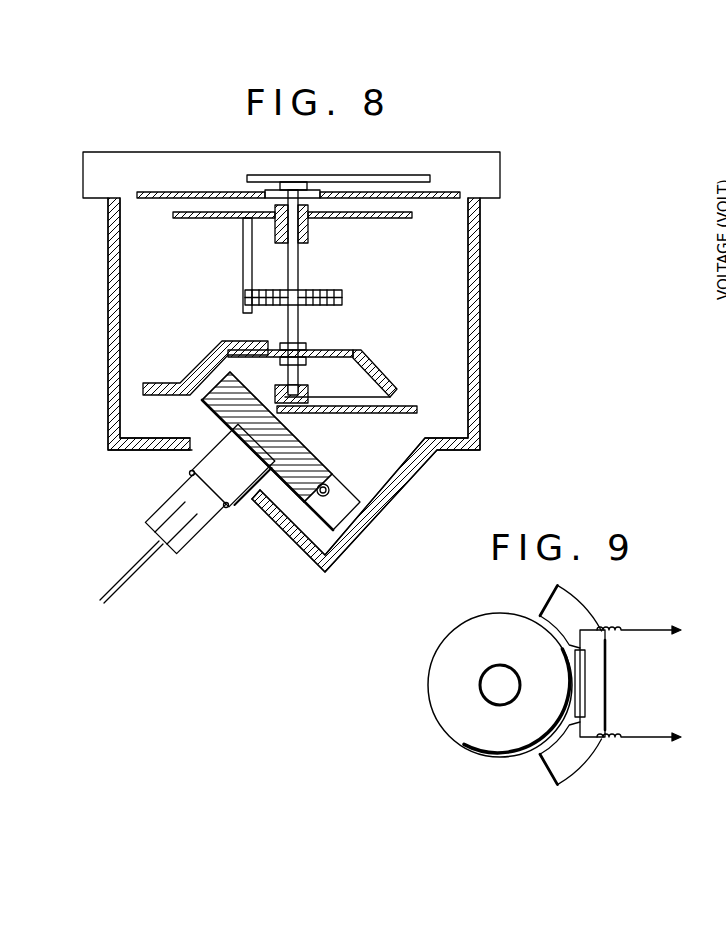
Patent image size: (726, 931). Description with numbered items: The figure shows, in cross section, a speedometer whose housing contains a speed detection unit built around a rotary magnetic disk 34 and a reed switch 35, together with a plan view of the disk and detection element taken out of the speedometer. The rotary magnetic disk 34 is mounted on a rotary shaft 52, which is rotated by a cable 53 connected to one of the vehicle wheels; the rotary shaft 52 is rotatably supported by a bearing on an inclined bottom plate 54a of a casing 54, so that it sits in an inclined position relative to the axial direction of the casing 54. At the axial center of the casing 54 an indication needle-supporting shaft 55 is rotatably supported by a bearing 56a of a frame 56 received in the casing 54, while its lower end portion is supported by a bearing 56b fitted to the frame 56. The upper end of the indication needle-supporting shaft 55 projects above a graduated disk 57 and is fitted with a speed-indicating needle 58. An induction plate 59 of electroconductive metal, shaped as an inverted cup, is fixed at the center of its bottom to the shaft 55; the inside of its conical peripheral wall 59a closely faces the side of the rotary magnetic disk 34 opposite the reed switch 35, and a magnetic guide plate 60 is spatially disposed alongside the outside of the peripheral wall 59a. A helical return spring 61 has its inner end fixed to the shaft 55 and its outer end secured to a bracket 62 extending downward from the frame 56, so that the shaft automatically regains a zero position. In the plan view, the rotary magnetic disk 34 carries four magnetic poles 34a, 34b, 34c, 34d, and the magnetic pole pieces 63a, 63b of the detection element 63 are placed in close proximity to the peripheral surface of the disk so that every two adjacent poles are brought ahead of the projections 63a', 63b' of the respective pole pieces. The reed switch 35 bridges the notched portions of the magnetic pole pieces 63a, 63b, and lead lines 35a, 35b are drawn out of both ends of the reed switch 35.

In FIG. 8, the casing 54 is at (480, 374).
In FIG. 8, the inclined bottom plate 54a is at (290, 536).
In FIG. 8, the graduated disk 57 is at (179, 192).
In FIG. 8, the speed-indicating needle 58 is at (400, 175).
In FIG. 8, the indication needle-supporting shaft 55 is at (298, 272).
In FIG. 8, the frame 56 is at (405, 218).
In FIG. 8, the bearing 56a is at (306, 237).
In FIG. 8, the bearing 56b is at (300, 404).
In FIG. 8, the bracket 62 is at (243, 270).
In FIG. 8, the helical return spring 61 is at (270, 305).
In FIG. 8, the induction plate 59 is at (335, 346).
In FIG. 8, the peripheral wall 59a is at (362, 362).
In FIG. 8, the magnetic guide plate 60 is at (207, 357).
In FIG. 8, the sensor yoke housing 63 is at (350, 503).
In FIG. 9, the magnetic pole piece 63a is at (582, 754).
In FIG. 9, the projection 63a' is at (540, 780).
In FIG. 9, the magnetic pole piece 63b is at (583, 616).
In FIG. 9, the projection 63b' is at (532, 600).
In FIG. 8, the rotary magnetic disk 34 is at (264, 476).
In FIG. 9, the rotary magnetic disk 34 is at (437, 686).
In FIG. 9, the magnetic pole 34a is at (538, 728).
In FIG. 9, the magnetic pole 34b is at (531, 640).
In FIG. 9, the magnetic pole 34c is at (448, 640).
In FIG. 9, the magnetic pole 34d is at (450, 717).
In FIG. 8, the reed switch 35 is at (326, 483).
In FIG. 9, the reed switch 35 is at (605, 685).
In FIG. 9, the lead line 35a is at (642, 613).
In FIG. 9, the lead line 35b is at (642, 722).
In FIG. 8, the rotary shaft 52 is at (200, 527).
In FIG. 9, the rotary shaft 52 is at (492, 690).
In FIG. 8, the cable 53 is at (118, 598).